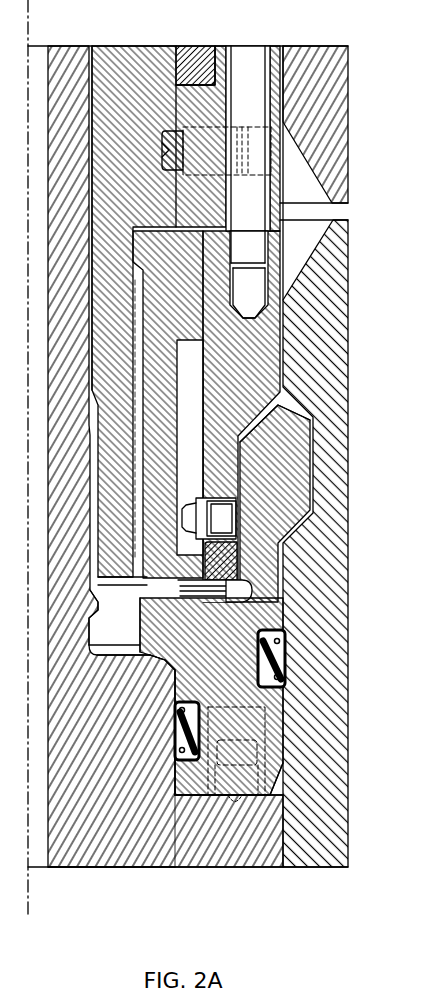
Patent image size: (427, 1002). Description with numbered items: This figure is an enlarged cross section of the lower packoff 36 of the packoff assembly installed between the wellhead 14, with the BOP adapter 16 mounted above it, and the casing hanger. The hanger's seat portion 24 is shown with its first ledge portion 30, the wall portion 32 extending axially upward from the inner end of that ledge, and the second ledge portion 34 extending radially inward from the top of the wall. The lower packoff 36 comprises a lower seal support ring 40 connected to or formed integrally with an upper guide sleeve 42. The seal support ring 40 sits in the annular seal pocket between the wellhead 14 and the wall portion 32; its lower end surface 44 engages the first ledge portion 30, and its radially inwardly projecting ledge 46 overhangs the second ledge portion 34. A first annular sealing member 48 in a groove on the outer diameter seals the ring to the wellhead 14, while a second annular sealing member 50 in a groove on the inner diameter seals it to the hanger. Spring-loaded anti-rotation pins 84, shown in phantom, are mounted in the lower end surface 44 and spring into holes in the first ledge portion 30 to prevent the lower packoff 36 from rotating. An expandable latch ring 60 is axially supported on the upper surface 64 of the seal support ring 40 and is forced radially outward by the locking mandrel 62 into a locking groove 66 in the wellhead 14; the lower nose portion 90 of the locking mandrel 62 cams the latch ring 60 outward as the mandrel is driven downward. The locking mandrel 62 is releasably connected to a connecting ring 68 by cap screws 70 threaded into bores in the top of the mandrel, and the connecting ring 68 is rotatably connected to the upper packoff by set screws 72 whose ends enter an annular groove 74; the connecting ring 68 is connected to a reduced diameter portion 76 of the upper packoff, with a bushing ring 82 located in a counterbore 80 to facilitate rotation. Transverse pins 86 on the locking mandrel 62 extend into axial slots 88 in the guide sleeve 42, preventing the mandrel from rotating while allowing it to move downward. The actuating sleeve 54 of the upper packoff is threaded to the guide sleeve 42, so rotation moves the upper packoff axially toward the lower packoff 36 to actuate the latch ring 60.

The wellhead 14 is at (340, 758).
The BOP adapter 16 is at (337, 62).
The seat portion 24 is at (101, 858).
The first ledge portion 30 is at (205, 792).
The wall portion 32 is at (173, 693).
The second ledge portion 34 is at (110, 655).
The lower packoff 36 is at (286, 766).
The lower seal support ring 40 is at (277, 715).
The upper guide sleeve 42 is at (152, 491).
The lower end surface 44 is at (213, 796).
The radially inwardly projecting ledge 46 is at (97, 624).
The first annular sealing member 48 is at (286, 654).
The second annular sealing member 50 is at (173, 730).
The actuating sleeve 54 is at (102, 384).
The expandable latch ring 60 is at (307, 477).
The locking mandrel 62 is at (275, 347).
The upper surface 64 is at (252, 598).
The locking groove 66 is at (303, 441).
The connecting ring 68 is at (273, 192).
The cap screws 70 is at (258, 87).
The set screws 72 is at (168, 161).
The annular groove 74 is at (170, 141).
The reduced diameter portion 76 is at (190, 199).
The counterbore 80 is at (196, 81).
The bushing ring 82 is at (200, 45).
The spring-loaded anti-rotation pins 84 is at (237, 803).
The transverse pins 86 is at (219, 537).
The axial slots 88 is at (185, 468).
The lower nose portion 90 is at (231, 485).